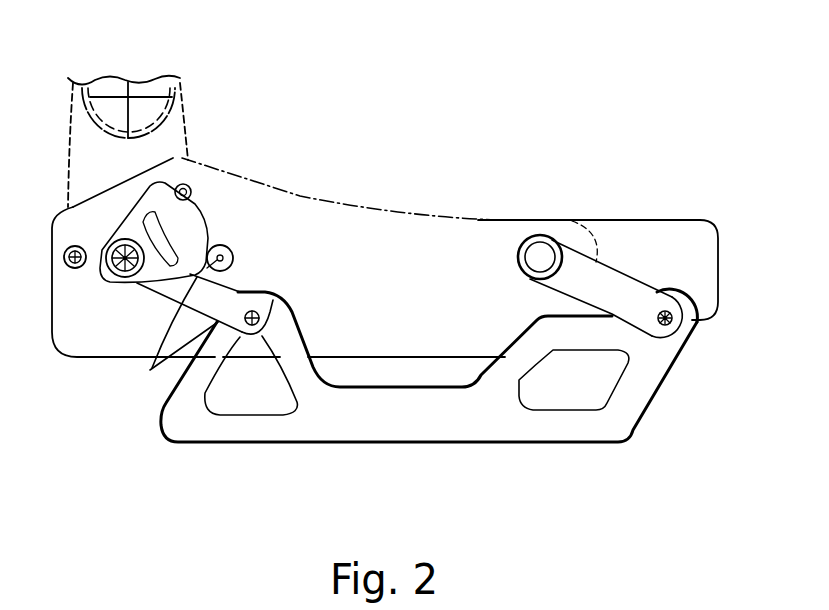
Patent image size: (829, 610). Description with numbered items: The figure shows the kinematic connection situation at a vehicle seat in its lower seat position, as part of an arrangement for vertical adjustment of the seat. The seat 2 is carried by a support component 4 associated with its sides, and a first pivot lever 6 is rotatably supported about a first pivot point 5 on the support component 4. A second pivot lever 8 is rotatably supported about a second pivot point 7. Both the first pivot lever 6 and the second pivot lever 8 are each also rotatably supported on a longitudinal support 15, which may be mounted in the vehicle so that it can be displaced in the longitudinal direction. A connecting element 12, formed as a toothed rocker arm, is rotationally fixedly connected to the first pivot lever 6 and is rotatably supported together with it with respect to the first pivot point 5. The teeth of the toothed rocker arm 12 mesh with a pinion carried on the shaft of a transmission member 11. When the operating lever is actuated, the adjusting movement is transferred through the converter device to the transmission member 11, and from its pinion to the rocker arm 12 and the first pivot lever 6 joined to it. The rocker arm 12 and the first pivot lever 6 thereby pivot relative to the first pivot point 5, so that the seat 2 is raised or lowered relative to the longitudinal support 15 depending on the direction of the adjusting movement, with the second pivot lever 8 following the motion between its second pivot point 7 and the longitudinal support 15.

The seat 2 is at (633, 238).
The support component 4 is at (417, 238).
The first pivot point 5 is at (122, 280).
The first pivot lever 6 is at (207, 303).
The second pivot point 7 is at (543, 250).
The second pivot lever 8 is at (633, 305).
The transmission member 11 is at (163, 330).
The connecting element 12 is at (183, 233).
The longitudinal support 15 is at (433, 423).